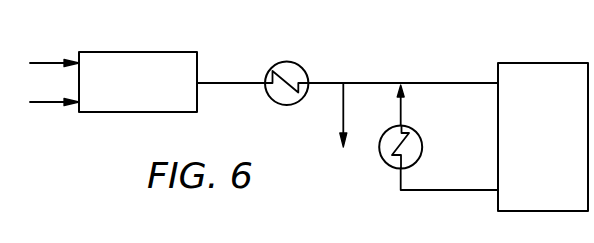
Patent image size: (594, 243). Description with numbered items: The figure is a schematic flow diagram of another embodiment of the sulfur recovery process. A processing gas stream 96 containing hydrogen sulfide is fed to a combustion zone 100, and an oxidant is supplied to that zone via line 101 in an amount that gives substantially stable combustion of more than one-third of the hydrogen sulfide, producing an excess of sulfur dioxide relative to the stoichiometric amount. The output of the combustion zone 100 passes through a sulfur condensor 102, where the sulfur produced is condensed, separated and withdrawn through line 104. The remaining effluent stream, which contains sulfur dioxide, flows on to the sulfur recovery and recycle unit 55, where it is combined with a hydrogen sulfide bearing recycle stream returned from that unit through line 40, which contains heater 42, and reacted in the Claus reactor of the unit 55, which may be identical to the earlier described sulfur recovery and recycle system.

The oxidant line 101 is at (42, 63).
The processing gas stream 96 is at (43, 102).
The combustion zone 100 is at (139, 112).
The sulfur condensor 102 is at (272, 94).
The sulfur withdrawal line 104 is at (343, 110).
The heater 42 is at (410, 129).
The sulfur recovery and recycle unit 55 is at (541, 63).
The recycle line 40 is at (460, 190).